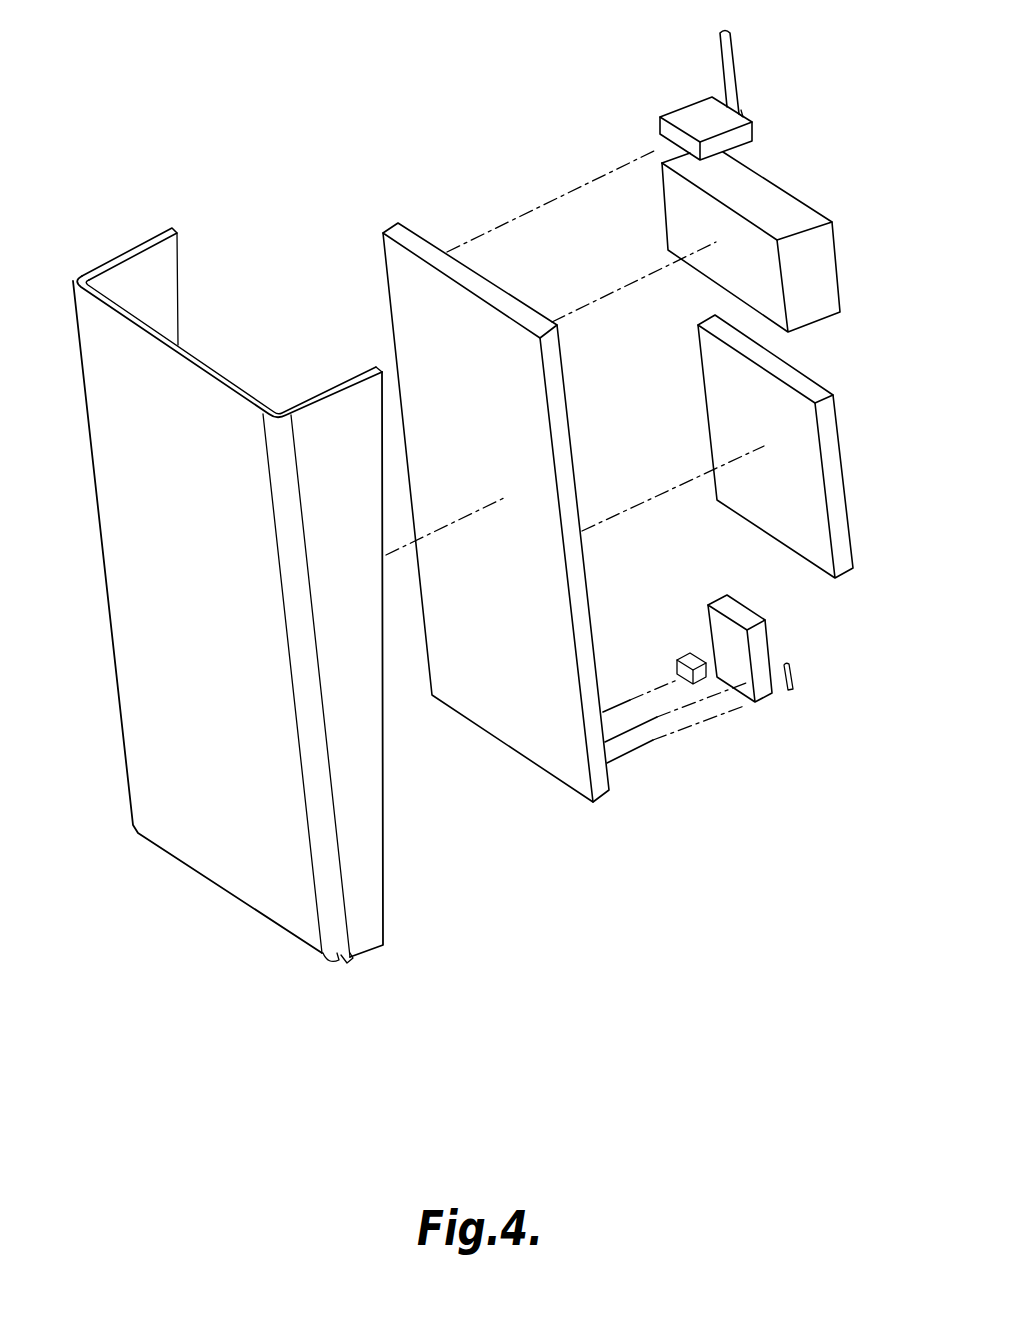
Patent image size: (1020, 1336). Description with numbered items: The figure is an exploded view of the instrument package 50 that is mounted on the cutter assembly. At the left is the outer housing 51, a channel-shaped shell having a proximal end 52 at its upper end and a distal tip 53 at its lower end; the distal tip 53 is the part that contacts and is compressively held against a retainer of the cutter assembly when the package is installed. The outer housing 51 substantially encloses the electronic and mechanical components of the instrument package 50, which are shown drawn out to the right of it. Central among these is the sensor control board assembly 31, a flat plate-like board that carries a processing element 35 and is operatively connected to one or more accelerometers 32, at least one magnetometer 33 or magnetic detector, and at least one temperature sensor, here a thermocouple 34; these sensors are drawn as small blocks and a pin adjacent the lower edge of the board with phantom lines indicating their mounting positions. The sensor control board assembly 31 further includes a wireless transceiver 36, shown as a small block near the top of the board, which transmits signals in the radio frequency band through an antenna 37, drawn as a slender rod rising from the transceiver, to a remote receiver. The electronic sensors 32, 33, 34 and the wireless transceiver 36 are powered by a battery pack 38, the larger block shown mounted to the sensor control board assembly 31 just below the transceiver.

The instrument package 50 is at (284, 96).
The outer housing 51 is at (218, 870).
The proximal end 52 is at (125, 247).
The distal tip 53 is at (358, 960).
The sensor control board assembly 31 is at (568, 470).
The accelerometer 32 is at (763, 653).
The magnetometer 33 is at (677, 668).
The thermocouple 34 is at (792, 683).
The processing element 35 is at (717, 397).
The wireless transceiver 36 is at (745, 135).
The antenna 37 is at (732, 68).
The battery pack 38 is at (820, 273).